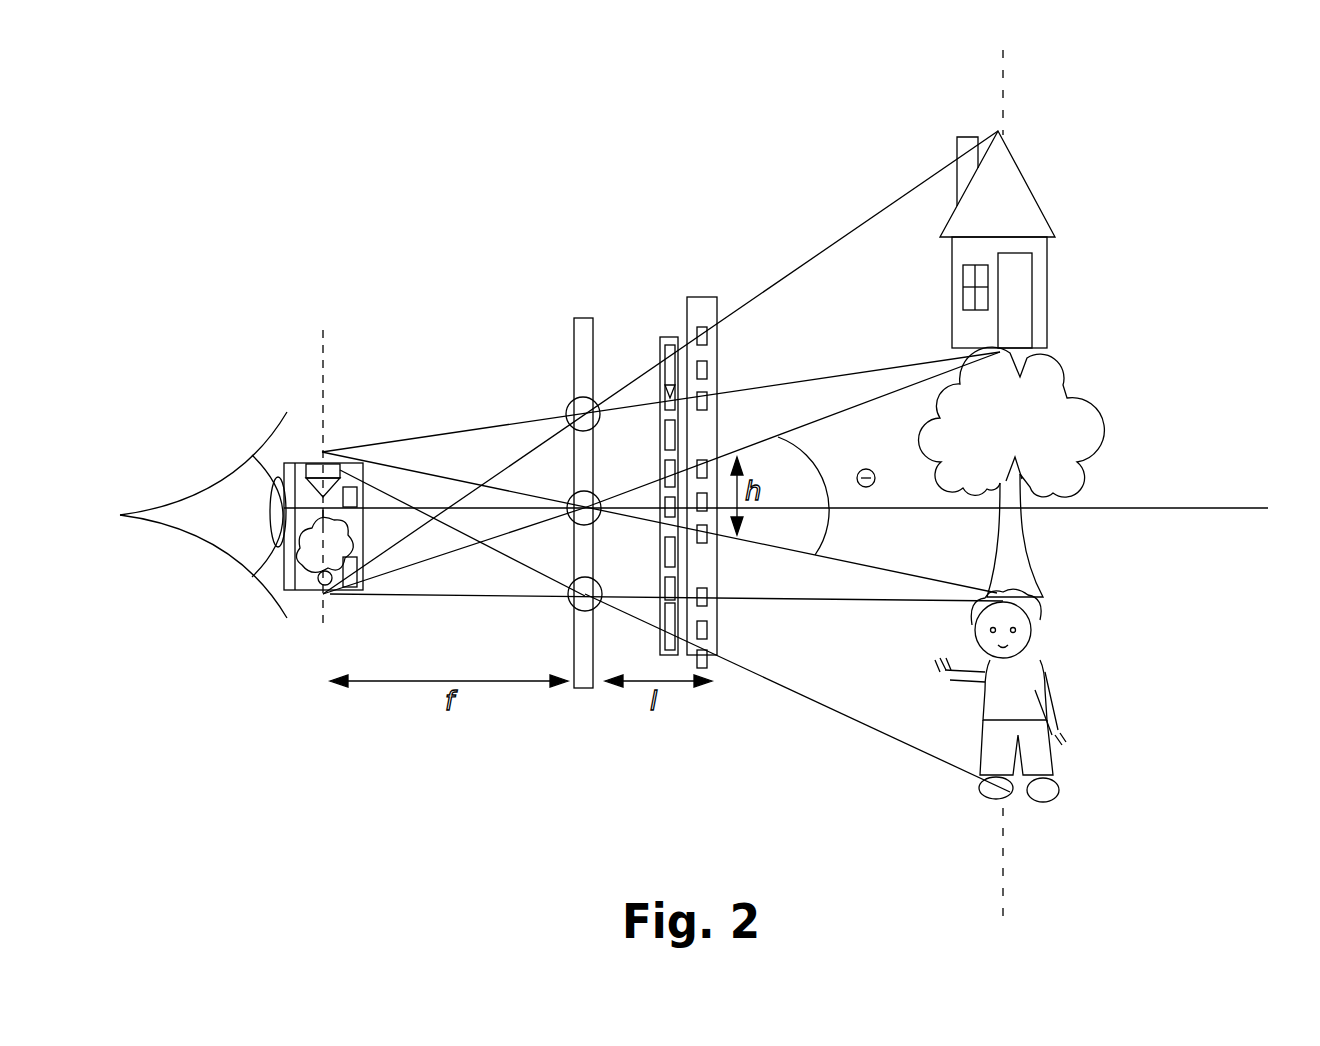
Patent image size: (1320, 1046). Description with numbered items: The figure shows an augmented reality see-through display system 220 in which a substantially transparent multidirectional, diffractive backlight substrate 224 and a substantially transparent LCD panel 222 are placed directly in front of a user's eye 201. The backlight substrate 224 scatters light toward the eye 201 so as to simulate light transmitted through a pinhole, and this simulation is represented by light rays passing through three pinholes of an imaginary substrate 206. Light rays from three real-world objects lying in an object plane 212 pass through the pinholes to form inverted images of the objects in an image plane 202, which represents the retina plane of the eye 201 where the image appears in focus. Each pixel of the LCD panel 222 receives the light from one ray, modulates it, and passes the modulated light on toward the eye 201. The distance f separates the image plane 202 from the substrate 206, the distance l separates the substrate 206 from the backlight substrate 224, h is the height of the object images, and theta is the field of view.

The user's eye 201 is at (235, 468).
The image plane 202 is at (325, 353).
The imaginary substrate 206 is at (573, 336).
The object plane 212 is at (1005, 872).
The augmented reality see-through display system 220 is at (738, 208).
The LCD panel 222 is at (660, 340).
The diffractive backlight substrate 224 is at (718, 348).